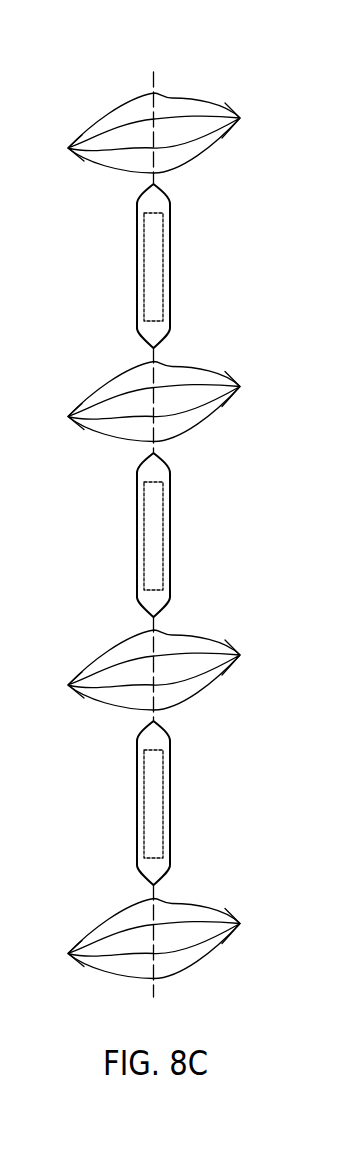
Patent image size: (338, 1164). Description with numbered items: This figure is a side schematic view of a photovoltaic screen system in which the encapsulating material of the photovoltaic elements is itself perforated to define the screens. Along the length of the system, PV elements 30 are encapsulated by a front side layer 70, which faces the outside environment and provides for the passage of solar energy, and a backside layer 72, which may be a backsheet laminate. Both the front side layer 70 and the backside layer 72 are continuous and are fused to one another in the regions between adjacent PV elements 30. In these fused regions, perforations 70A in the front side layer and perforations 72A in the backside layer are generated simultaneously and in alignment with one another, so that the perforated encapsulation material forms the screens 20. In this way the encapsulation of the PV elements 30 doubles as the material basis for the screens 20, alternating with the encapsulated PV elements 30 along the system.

The screen 20 is at (205, 60).
The PV element 30 is at (153, 232).
The front side layer 70 is at (171, 279).
The perforation 70A is at (252, 523).
The backside layer 72 is at (136, 268).
The perforation 72A is at (52, 551).